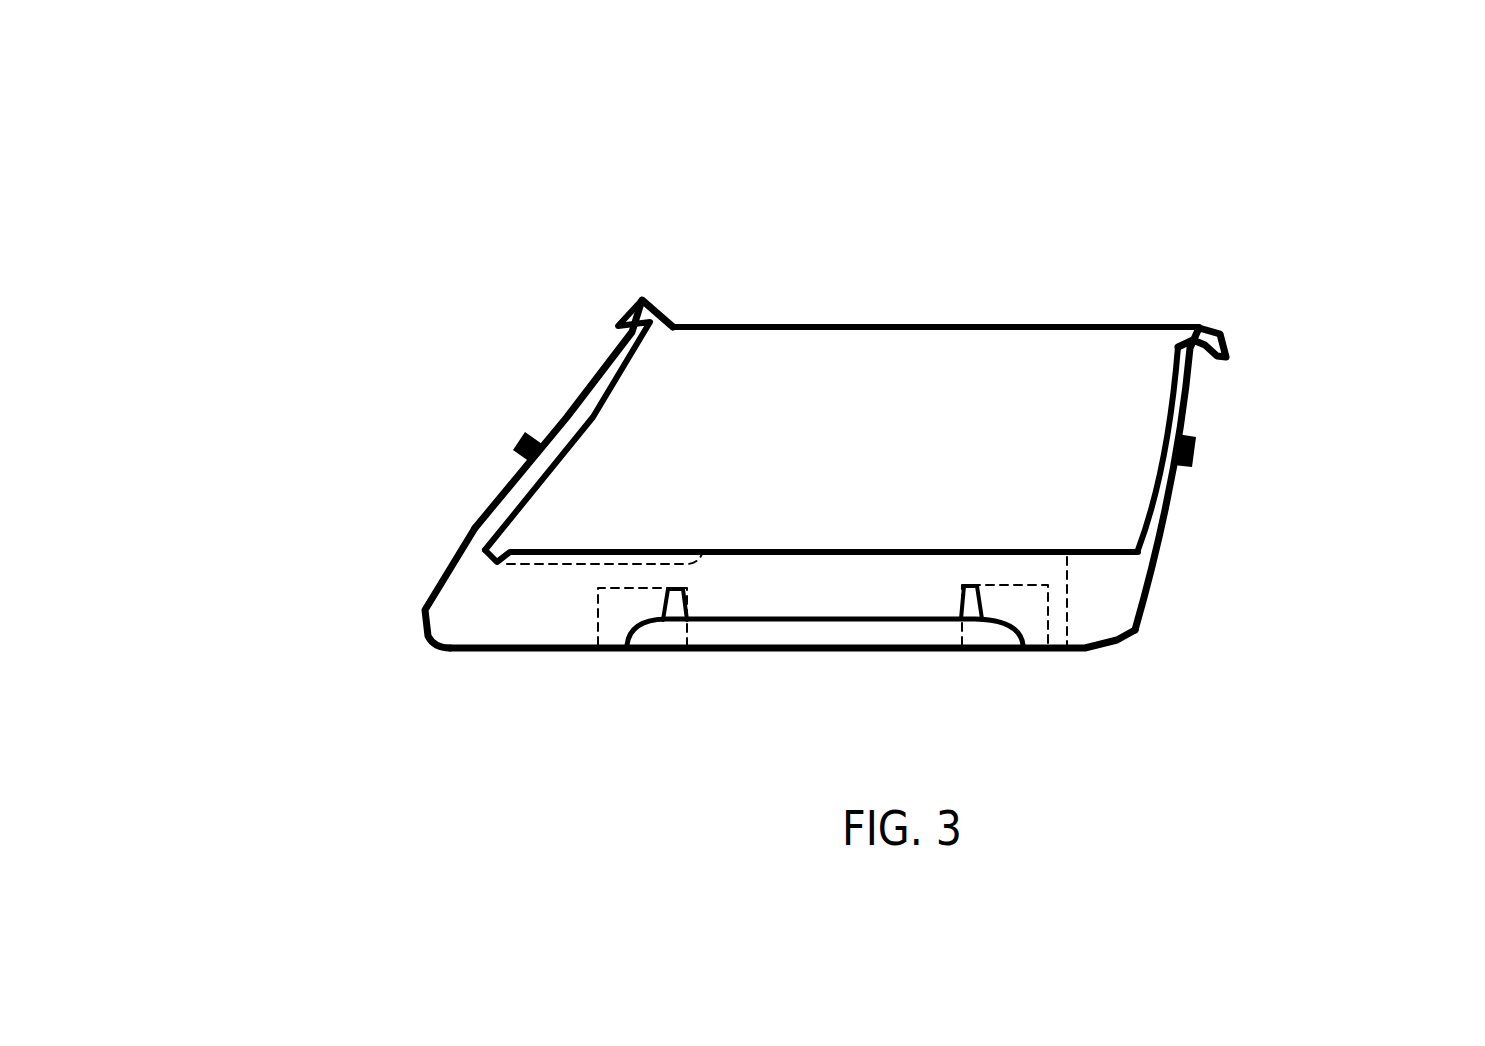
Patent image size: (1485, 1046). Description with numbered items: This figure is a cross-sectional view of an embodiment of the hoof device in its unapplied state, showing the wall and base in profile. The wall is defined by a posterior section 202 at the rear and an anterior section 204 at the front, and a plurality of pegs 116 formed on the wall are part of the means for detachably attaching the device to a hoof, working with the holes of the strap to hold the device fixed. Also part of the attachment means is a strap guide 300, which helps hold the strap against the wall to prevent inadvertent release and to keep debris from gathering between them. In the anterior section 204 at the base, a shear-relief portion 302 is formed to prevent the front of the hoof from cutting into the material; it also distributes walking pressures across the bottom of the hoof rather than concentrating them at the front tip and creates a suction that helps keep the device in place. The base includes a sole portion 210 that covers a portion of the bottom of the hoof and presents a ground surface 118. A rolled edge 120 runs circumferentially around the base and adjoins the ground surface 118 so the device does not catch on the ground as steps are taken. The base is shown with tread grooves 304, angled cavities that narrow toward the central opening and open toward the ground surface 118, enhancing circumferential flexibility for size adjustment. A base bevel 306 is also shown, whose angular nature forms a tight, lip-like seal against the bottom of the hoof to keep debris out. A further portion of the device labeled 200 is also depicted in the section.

The strap guide 300 is at (636, 300).
The shear-relief portion 302 is at (573, 562).
The tread grooves 304 is at (970, 597).
The base bevel 306 is at (972, 629).
The housing 200 is at (1000, 377).
The posterior section 202 is at (1170, 478).
The anterior section 204 is at (565, 418).
The sole portion 210 is at (732, 546).
The pegs 116 is at (1196, 440).
The ground surface 118 is at (540, 655).
The rolled edge 120 is at (423, 626).